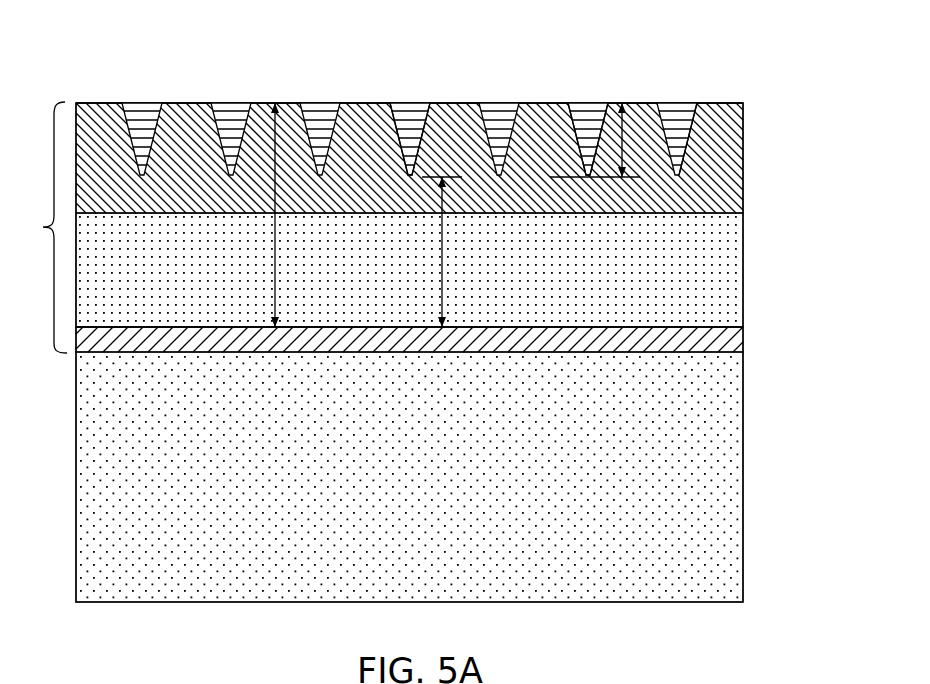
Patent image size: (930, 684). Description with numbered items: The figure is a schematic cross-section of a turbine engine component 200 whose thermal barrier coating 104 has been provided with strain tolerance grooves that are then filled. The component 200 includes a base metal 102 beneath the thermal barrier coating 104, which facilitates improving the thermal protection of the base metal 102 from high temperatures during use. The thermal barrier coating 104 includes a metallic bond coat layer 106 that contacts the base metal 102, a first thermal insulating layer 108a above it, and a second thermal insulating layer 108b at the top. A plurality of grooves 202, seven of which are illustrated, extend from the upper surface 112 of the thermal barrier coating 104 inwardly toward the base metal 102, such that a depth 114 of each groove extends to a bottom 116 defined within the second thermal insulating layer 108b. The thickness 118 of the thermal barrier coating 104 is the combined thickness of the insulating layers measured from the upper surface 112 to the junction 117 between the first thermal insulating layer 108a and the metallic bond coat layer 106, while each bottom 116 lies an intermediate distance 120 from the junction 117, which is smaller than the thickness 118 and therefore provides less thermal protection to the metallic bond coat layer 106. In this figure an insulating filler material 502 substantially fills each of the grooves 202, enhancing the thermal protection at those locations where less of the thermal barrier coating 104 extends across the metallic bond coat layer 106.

The turbine engine component 200 is at (708, 43).
The base metal 102 is at (743, 463).
The thermal barrier coating 104 is at (35, 227).
The metallic bond coat layer 106 is at (743, 345).
The first thermal insulating layer 108a is at (743, 268).
The second thermal insulating layer 108b is at (743, 165).
The upper surface 112 is at (107, 103).
The depth 114 is at (606, 130).
The bottom 116 is at (562, 177).
The junction 117 is at (110, 332).
The thickness 118 is at (270, 228).
The intermediate distance 120 is at (412, 172).
The grooves 202 is at (697, 128).
The insulating filler material 502 is at (684, 103).